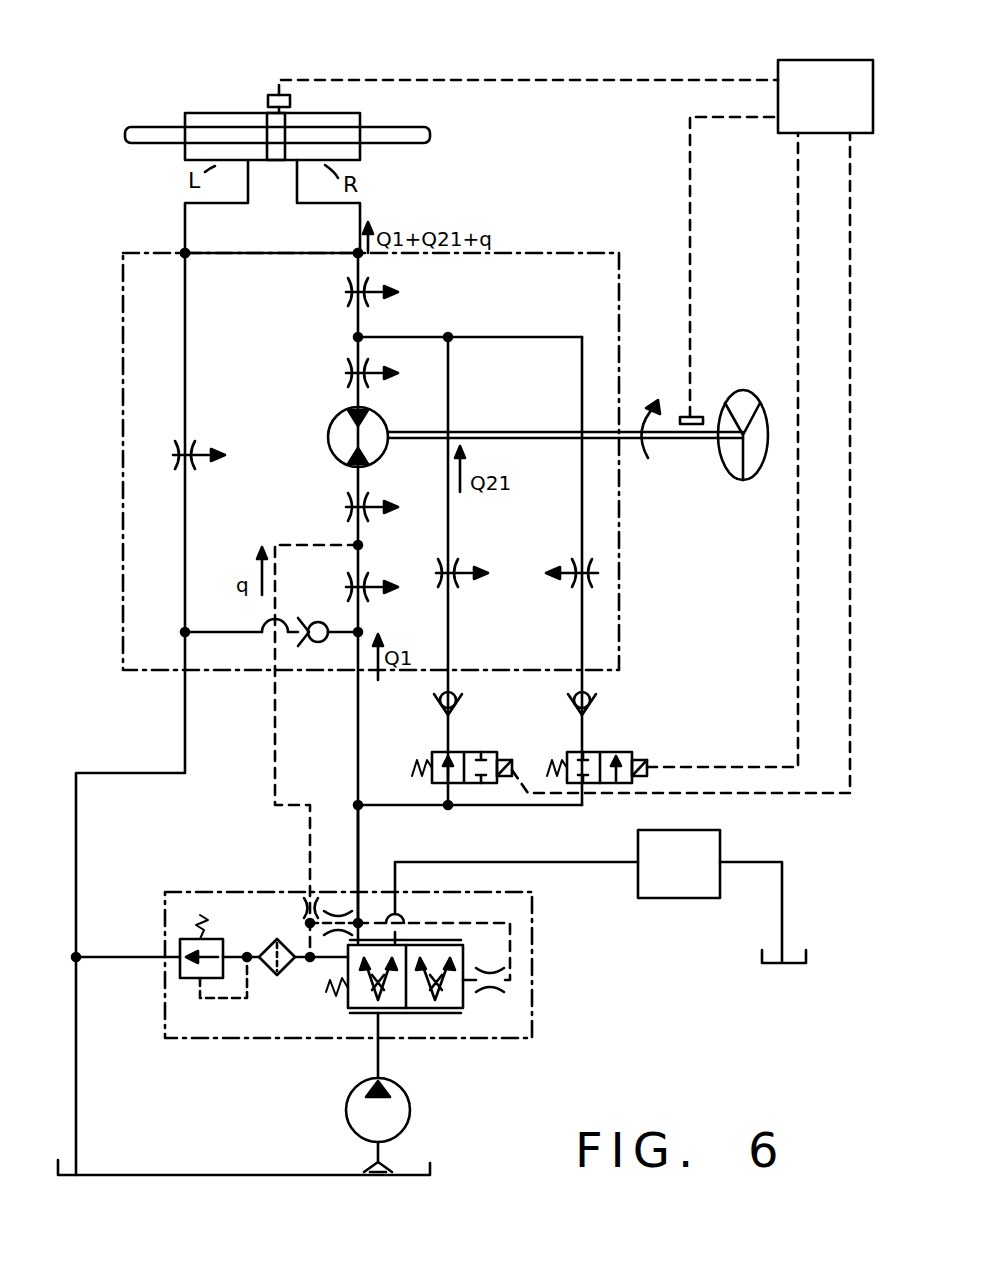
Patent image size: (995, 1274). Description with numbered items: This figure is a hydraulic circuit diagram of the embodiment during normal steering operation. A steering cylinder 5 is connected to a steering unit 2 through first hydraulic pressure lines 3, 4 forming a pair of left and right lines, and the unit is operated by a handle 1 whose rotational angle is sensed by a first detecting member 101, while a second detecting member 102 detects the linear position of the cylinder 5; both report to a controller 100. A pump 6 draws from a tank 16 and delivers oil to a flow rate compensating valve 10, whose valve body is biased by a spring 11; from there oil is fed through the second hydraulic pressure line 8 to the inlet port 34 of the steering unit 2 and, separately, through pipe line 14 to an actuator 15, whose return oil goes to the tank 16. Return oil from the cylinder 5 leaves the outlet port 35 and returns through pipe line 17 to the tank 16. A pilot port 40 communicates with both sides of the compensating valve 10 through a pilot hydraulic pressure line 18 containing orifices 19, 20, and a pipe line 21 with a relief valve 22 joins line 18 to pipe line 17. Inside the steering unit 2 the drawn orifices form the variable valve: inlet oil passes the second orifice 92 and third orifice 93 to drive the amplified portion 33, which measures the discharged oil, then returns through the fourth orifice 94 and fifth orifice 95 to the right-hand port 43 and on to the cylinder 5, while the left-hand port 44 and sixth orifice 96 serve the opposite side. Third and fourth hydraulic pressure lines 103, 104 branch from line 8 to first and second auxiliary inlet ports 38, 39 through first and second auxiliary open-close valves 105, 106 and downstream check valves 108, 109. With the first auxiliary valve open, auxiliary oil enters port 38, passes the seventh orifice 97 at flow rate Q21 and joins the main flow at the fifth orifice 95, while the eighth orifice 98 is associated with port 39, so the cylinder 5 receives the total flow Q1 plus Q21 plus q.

The handle 1 is at (763, 398).
The steering unit 2 is at (619, 624).
The first hydraulic pressure line 3 is at (185, 238).
The first hydraulic pressure line 4 is at (362, 216).
The steering cylinder 5 is at (364, 114).
The pump 6 is at (408, 1116).
The second hydraulic pressure line 8 is at (358, 856).
The flow rate compensating valve 10 is at (533, 1010).
The spring 11 is at (334, 990).
The pipe line 14 is at (576, 862).
The actuator 15 is at (702, 898).
The tank 16 is at (764, 966).
The pipe line 17 is at (112, 772).
The pilot hydraulic pressure line 18 is at (272, 760).
The orifice 19 is at (346, 913).
The orifice 20 is at (306, 899).
The pipe line 21 is at (112, 958).
The relief valve 22 is at (194, 979).
The amplified portion 33 is at (328, 437).
The inlet port 34 is at (358, 674).
The outlet port 35 is at (185, 674).
The first auxiliary inlet port 38 is at (448, 648).
The second auxiliary inlet port 39 is at (582, 652).
The pilot port 40 is at (275, 672).
The right-hand port 43 is at (357, 258).
The left-hand port 44 is at (187, 258).
The second orifice 92 is at (366, 580).
The third orifice 93 is at (346, 507).
The fourth orifice 94 is at (346, 373).
The fifth orifice 95 is at (346, 300).
The sixth orifice 96 is at (173, 455).
The seventh orifice 97 is at (478, 545).
The eighth orifice 98 is at (570, 565).
The controller 100 is at (838, 78).
The first detecting member 101 is at (690, 416).
The second detecting member 102 is at (278, 95).
The third hydraulic pressure line 103 is at (446, 742).
The fourth hydraulic pressure line 104 is at (582, 742).
The first auxiliary open-close valve 105 is at (497, 786).
The second auxiliary open-close valve 106 is at (636, 754).
The check valve 108 is at (460, 704).
The check valve 109 is at (598, 702).